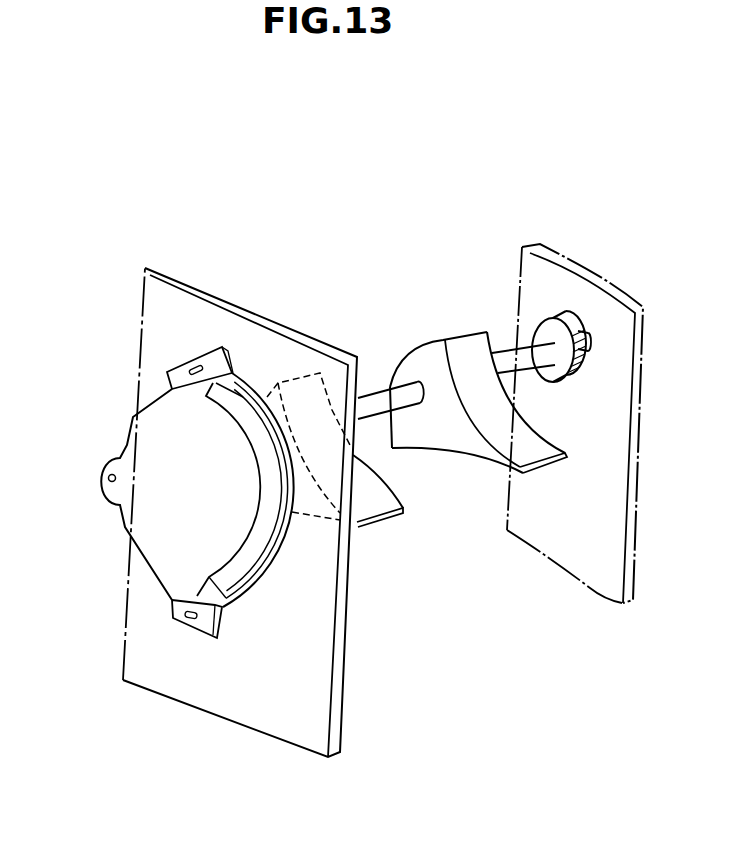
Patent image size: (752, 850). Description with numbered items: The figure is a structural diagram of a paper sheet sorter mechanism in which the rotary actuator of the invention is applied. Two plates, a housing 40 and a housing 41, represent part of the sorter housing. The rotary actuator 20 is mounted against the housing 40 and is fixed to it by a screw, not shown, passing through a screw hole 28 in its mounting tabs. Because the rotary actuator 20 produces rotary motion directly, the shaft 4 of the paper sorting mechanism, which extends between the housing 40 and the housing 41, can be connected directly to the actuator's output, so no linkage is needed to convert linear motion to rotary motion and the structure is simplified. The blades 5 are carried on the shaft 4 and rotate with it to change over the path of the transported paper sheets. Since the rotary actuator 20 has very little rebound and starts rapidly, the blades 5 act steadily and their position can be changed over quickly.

The housing 40 is at (153, 312).
The housing 41 is at (605, 307).
The rotary actuator 20 is at (153, 537).
The screw hole 28 is at (185, 375).
The shaft 4 is at (520, 357).
The blades 5 is at (458, 360).